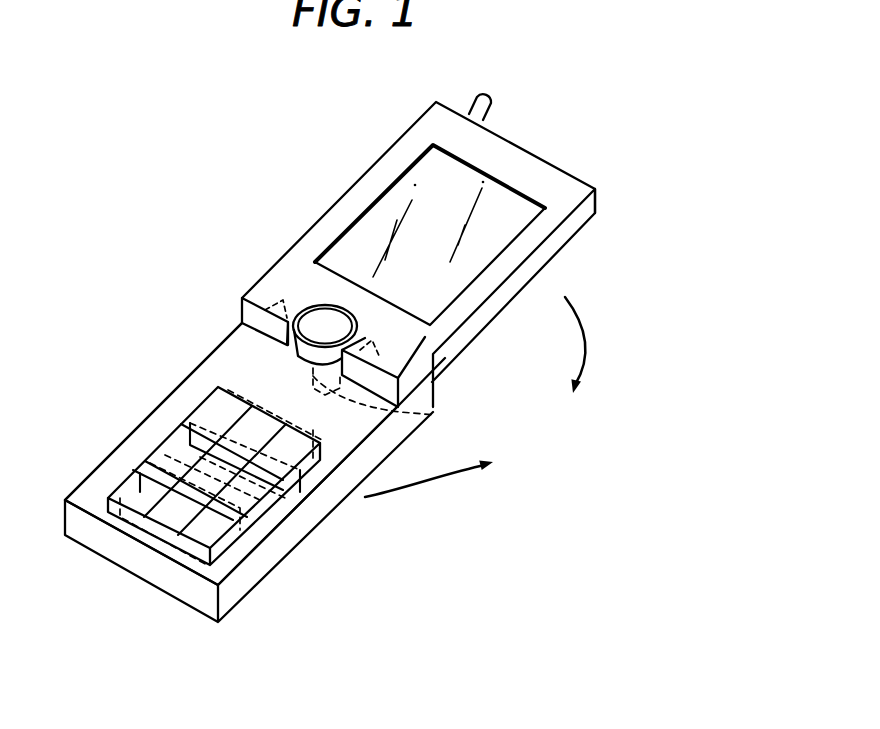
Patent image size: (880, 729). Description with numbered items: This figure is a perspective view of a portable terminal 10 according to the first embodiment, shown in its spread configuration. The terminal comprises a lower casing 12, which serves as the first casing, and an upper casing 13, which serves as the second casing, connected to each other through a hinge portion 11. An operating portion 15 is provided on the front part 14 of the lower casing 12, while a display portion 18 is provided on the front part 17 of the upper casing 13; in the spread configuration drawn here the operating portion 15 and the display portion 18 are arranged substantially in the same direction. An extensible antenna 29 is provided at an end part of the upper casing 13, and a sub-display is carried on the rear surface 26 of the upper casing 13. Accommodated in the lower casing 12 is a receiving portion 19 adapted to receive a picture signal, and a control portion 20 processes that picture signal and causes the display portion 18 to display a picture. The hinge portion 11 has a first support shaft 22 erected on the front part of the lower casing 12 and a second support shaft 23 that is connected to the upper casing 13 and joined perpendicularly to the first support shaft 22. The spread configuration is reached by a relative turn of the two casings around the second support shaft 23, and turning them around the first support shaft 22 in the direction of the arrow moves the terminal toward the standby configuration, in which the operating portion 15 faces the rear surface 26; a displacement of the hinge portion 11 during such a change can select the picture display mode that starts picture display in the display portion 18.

The portable terminal 10 is at (194, 275).
The hinge portion 11 is at (362, 327).
The lower casing 12 is at (170, 378).
The upper casing 13 is at (366, 166).
The front part of the lower casing 14 is at (268, 521).
The operating portion 15 is at (148, 452).
The front part of the upper casing 17 is at (542, 233).
The display portion 18 is at (488, 207).
The receiving portion 19 is at (163, 537).
The control portion 20 is at (310, 464).
The first support shaft 22 is at (435, 415).
The second support shaft 23 is at (280, 310).
The rear surface of the upper casing 26 is at (548, 267).
The extensible antenna 29 is at (488, 120).